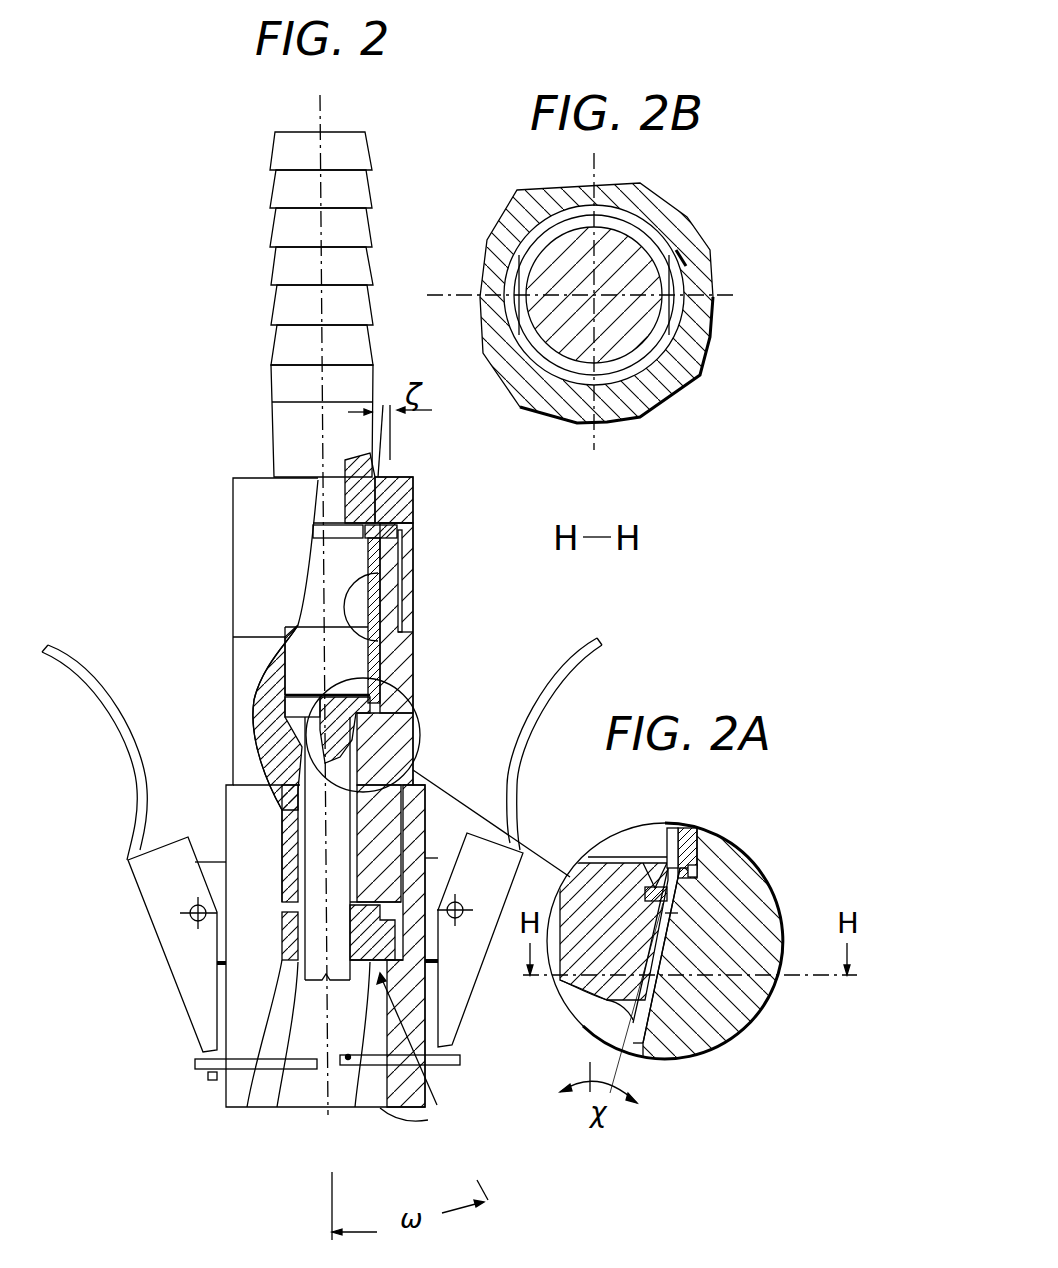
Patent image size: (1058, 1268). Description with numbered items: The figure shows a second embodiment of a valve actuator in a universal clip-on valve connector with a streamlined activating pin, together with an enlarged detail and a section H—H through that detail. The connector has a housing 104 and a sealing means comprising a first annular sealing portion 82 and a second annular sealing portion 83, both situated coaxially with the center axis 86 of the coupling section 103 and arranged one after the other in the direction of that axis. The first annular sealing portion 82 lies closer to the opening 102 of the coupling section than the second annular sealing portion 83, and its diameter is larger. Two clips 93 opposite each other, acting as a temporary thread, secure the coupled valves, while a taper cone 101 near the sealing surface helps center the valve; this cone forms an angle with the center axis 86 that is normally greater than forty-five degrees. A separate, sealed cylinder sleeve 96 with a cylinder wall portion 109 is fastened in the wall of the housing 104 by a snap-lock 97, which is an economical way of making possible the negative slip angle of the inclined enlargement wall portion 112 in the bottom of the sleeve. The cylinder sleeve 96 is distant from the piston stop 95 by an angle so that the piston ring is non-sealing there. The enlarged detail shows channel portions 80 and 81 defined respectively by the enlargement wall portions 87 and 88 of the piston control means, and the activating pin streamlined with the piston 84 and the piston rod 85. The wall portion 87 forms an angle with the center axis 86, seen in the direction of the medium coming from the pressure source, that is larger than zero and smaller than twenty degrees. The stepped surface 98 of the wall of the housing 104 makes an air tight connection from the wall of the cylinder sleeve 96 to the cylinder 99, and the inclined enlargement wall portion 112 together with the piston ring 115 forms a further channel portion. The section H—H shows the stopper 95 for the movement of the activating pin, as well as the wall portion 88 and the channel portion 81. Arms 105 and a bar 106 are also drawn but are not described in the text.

In FIG. 2A, the channel portion 80 is at (657, 948).
In FIG. 2B, the channel portion 81 is at (665, 317).
In FIG. 2A, the channel portion 81 is at (640, 1047).
In FIG. 2, the first annular sealing portion 82 is at (243, 1108).
In FIG. 2, the second annular sealing portion 83 is at (292, 1106).
In FIG. 2A, the piston 84 is at (613, 892).
In FIG. 2A, the piston rod 85 is at (605, 1023).
In FIG. 2, the center axis 86 is at (330, 1122).
In FIG. 2A, the enlargement wall portion 87 is at (670, 927).
In FIG. 2B, the enlargement wall portion 88 is at (687, 261).
In FIG. 2A, the enlargement wall portion 88 is at (645, 1030).
In FIG. 2, the clips 93 is at (357, 1108).
In FIG. 2, the piston stop 95 is at (292, 738).
In FIG. 2B, the piston stop 95 is at (637, 362).
In FIG. 2, the cylinder sleeve 96 is at (379, 669).
In FIG. 2, the snap-lock 97 is at (385, 651).
In FIG. 2A, the stepped surface 98 is at (690, 868).
In FIG. 2, the cylinder 99 is at (359, 602).
In FIG. 2, the taper cone 101 is at (428, 1055).
In FIG. 2, the opening 102 is at (313, 1107).
In FIG. 2, the coupling section 103 is at (305, 1080).
In FIG. 2, the housing 104 is at (392, 727).
In FIG. 2B, the housing 104 is at (618, 413).
In FIG. 2, the arm 105 is at (283, 934).
In FIG. 2, the bar 106 is at (250, 1033).
In FIG. 2, the cylinder wall portion 109 is at (375, 563).
In FIG. 2A, the inclined enlargement wall portion 112 is at (692, 862).
In FIG. 2A, the piston ring 115 is at (662, 888).